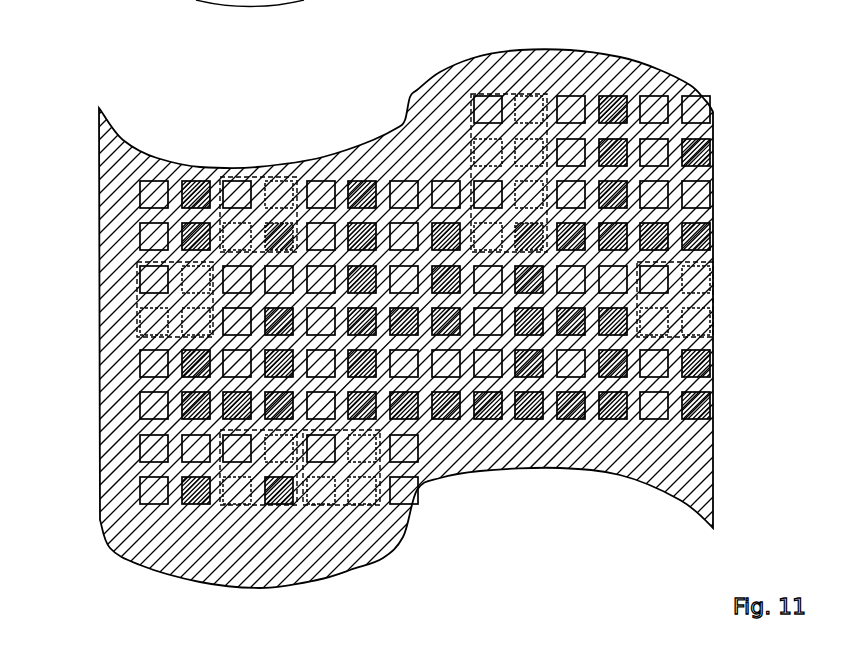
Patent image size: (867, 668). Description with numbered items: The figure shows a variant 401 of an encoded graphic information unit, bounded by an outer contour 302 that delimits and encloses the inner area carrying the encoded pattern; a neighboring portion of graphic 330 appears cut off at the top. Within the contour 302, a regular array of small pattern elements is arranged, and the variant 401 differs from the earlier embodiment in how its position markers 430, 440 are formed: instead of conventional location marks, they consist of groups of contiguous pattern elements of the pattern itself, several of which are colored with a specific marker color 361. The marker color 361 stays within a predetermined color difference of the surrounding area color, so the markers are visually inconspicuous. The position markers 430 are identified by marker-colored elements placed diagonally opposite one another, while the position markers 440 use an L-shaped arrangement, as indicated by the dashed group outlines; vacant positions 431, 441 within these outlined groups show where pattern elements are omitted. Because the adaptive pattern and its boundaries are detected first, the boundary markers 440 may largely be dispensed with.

The outer contour 302 is at (408, 97).
The adjacent component 330 is at (275, 0).
The variant of the encoded information unit 401 is at (301, 134).
The position markers 430 is at (237, 182).
The vacant element position 431 is at (267, 445).
The position markers 440 is at (517, 92).
The vacant group position 441 is at (418, 450).
The marker color 361 is at (713, 322).